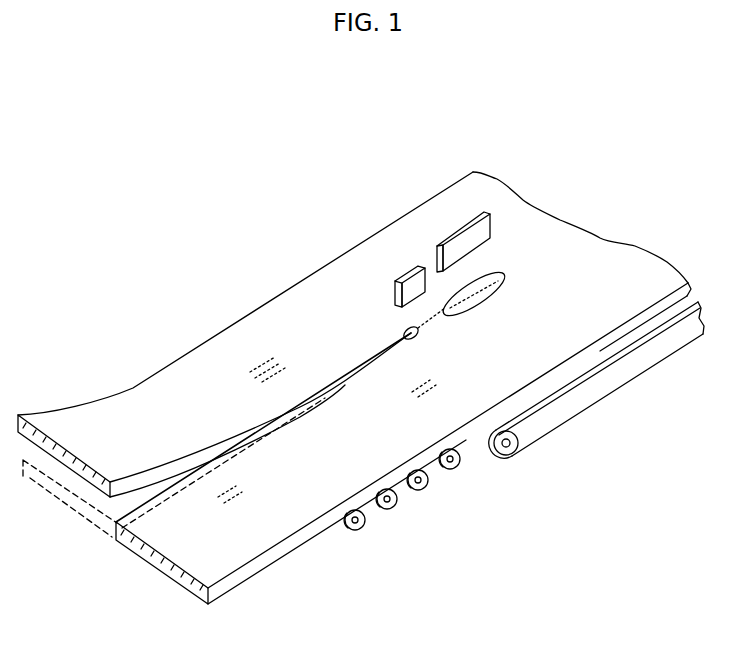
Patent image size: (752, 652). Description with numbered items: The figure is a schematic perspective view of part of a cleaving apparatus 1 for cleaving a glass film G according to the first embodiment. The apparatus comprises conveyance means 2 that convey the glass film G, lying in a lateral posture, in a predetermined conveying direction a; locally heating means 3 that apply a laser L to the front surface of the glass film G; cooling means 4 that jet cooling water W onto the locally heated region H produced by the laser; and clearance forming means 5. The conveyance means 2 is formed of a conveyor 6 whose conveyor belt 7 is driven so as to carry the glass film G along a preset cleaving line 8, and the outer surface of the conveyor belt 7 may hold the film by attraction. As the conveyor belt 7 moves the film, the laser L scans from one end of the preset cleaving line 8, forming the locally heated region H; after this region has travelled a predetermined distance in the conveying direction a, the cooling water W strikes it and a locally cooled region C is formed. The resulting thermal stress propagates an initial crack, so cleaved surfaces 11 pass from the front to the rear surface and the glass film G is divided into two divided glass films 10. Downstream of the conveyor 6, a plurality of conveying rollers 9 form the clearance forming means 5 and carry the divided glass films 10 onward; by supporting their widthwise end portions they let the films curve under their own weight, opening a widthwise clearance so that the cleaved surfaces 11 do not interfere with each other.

The cleaving apparatus 1 is at (222, 212).
The conveyance means 2 is at (580, 498).
The locally heating means 3 is at (462, 232).
The cooling means 4 is at (427, 297).
The clearance forming means 5 is at (419, 522).
The conveyor 6 is at (599, 380).
The conveyor belt 7 is at (673, 340).
The preset cleaving line 8 is at (505, 282).
The conveying rollers 9 is at (357, 532).
The divided glass films 10 is at (190, 390).
The cleaved surfaces 11 is at (247, 432).
The cooling water W is at (388, 317).
The laser L is at (496, 257).
The glass film G is at (578, 297).
The locally heated region H is at (503, 293).
The locally cooled region C is at (418, 340).
The conveying direction a is at (300, 252).